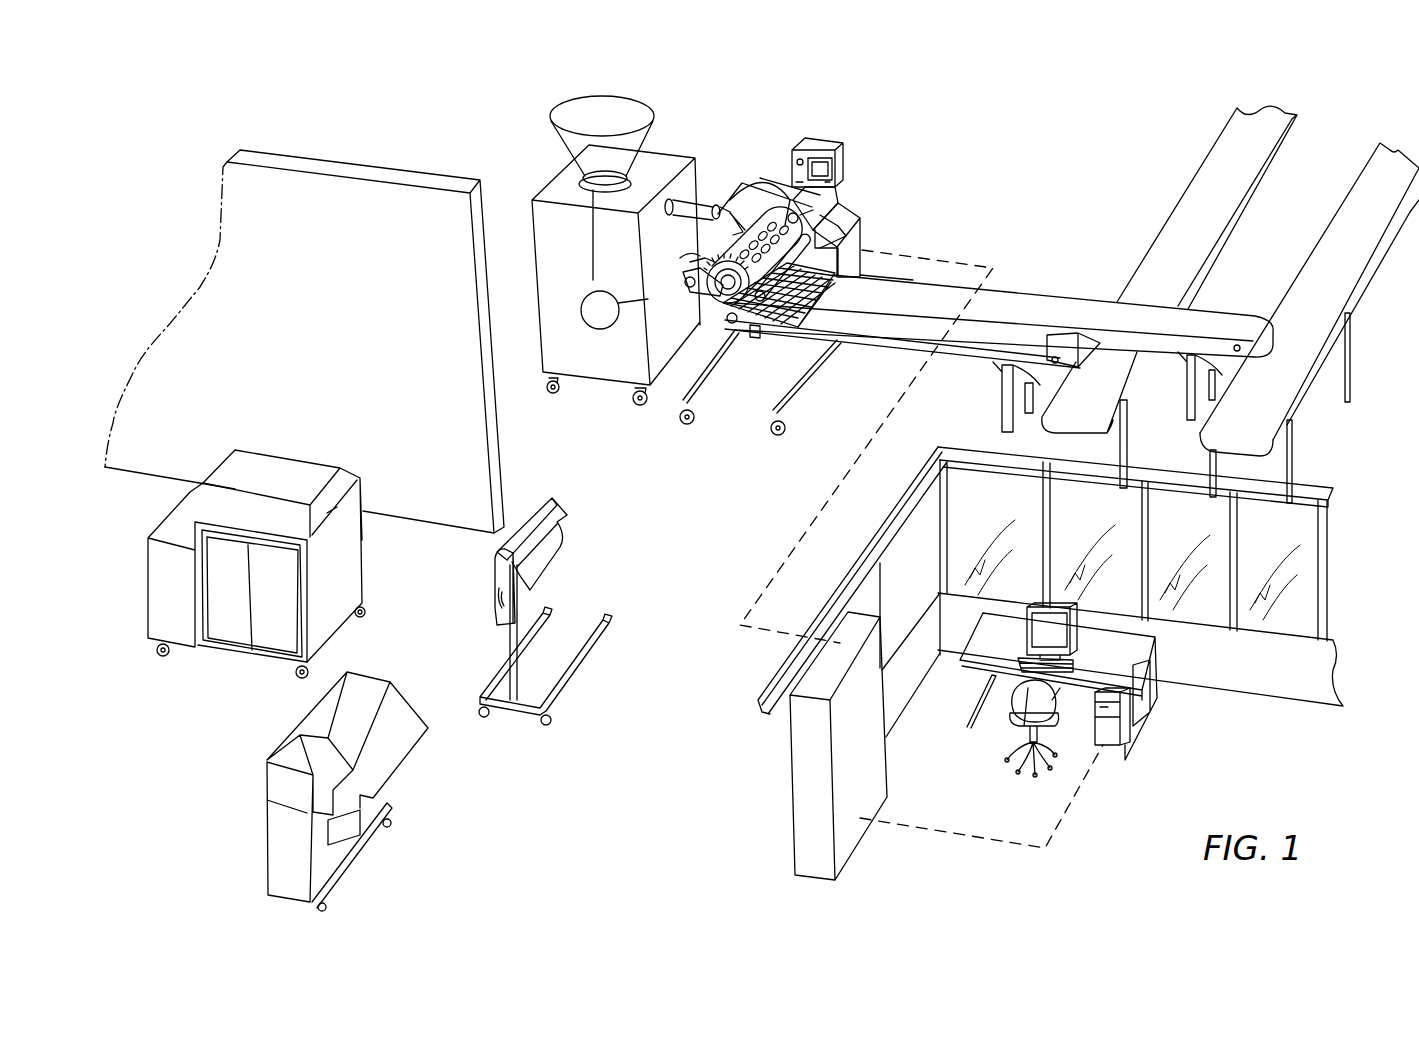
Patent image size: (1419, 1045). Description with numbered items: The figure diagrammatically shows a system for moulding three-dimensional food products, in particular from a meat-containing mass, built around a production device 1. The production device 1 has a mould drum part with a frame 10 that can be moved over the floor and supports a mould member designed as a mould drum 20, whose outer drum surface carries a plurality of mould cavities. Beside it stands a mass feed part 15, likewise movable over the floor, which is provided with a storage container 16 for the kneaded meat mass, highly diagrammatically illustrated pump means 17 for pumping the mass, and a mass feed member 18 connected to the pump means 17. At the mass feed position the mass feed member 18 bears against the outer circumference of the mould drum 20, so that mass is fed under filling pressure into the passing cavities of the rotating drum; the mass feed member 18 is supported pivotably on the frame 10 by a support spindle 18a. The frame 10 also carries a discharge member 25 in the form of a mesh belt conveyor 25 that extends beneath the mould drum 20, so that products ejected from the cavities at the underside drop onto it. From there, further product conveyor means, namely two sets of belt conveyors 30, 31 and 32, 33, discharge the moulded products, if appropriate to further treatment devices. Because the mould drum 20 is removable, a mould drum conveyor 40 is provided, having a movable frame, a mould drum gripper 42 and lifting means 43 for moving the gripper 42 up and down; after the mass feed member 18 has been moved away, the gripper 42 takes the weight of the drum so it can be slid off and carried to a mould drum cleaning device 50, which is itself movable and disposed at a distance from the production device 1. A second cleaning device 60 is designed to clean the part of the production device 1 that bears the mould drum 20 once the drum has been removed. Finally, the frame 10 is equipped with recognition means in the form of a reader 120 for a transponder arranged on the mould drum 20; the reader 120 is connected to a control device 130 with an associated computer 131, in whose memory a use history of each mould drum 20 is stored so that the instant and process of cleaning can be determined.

The production device 1 is at (915, 160).
The frame 10 is at (849, 219).
The mass feed part 15 is at (607, 407).
The storage container 16 is at (628, 150).
The pump means 17 is at (597, 318).
The mass feed member 18 is at (763, 224).
The support spindle 18a is at (690, 262).
The mould drum 20 is at (762, 178).
The discharge member 25 is at (760, 330).
The belt conveyor 30 is at (893, 328).
The belt conveyor 31 is at (1198, 203).
The belt conveyor 32 is at (1050, 310).
The belt conveyor 33 is at (1330, 247).
The mould drum conveyor 40 is at (596, 689).
The mould drum gripper 42 is at (585, 549).
The lifting means 43 is at (470, 619).
The mould drum cleaning device 50 is at (395, 562).
The second cleaning device 60 is at (428, 797).
The reader 120 is at (837, 208).
The control device 130 is at (783, 842).
The computer 131 is at (1112, 772).